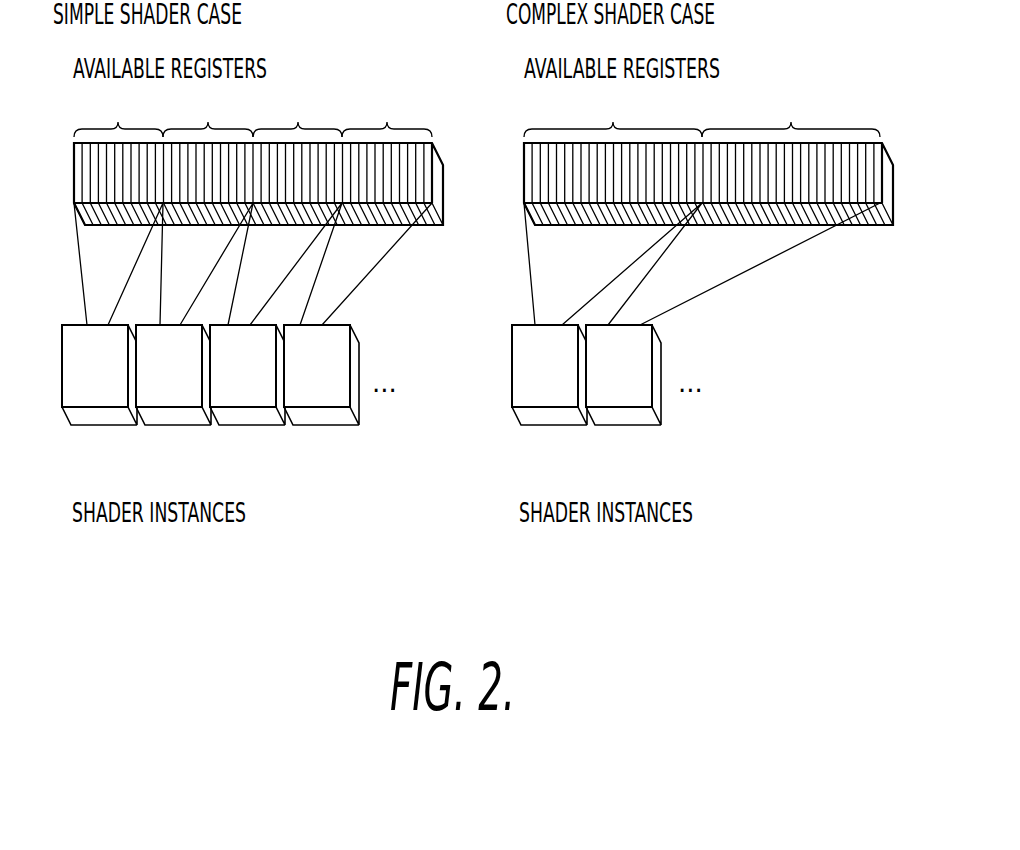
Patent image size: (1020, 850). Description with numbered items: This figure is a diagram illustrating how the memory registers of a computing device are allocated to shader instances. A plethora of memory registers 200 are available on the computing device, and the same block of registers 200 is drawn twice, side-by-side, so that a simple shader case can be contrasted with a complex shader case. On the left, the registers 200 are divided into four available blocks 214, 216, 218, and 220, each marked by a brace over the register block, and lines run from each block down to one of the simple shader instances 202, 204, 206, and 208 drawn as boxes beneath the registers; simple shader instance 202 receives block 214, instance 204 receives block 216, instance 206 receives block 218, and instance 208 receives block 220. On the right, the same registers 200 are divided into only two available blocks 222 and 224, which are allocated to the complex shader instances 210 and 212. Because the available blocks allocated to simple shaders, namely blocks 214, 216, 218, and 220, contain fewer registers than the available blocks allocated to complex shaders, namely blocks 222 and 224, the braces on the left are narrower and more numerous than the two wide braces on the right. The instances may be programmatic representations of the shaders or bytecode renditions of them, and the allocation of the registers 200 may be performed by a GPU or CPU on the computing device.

The memory registers 200 is at (74, 172).
The simple shader instance 202 is at (101, 427).
The simple shader instance 204 is at (173, 427).
The simple shader instance 206 is at (247, 427).
The simple shader instance 208 is at (327, 427).
The complex shader instance 210 is at (550, 427).
The complex shader instance 212 is at (632, 427).
The available block 214 is at (118, 114).
The available block 216 is at (208, 114).
The available block 218 is at (297, 114).
The available block 220 is at (387, 114).
The available block 222 is at (613, 114).
The available block 224 is at (791, 114).